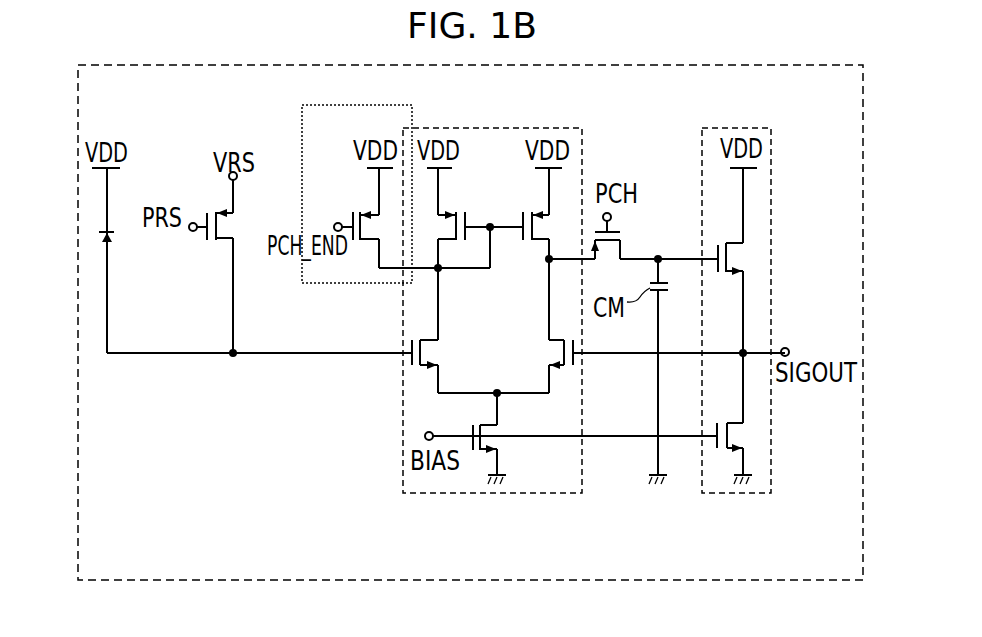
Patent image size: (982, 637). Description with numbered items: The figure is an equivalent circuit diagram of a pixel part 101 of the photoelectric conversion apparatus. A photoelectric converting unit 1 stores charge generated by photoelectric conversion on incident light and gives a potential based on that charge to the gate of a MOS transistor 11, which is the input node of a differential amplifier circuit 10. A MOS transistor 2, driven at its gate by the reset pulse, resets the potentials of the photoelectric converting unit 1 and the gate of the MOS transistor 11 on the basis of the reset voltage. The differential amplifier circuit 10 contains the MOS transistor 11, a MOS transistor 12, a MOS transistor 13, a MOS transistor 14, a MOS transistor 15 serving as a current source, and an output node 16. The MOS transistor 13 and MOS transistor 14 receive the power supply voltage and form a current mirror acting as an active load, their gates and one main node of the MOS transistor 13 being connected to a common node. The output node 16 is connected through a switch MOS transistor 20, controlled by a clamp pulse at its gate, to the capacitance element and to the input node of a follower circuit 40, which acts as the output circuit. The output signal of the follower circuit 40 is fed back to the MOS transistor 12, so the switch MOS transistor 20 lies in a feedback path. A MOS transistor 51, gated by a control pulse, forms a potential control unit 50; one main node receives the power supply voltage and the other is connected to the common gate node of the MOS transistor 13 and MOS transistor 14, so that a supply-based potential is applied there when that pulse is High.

The photoelectric converting unit 1 is at (110, 240).
The MOS transistor 2 is at (232, 227).
The differential amplifier circuit 10 is at (505, 127).
The MOS transistor 11 is at (409, 363).
The MOS transistor 12 is at (550, 350).
The MOS transistor 13 is at (462, 210).
The MOS transistor 14 is at (523, 213).
The MOS transistor for a current source 15 is at (470, 457).
The output node 16 is at (547, 262).
The switch MOS transistor 20 is at (622, 235).
The follower circuit 40 is at (737, 128).
The potential control unit 50 is at (300, 122).
The MOS transistor 51 is at (357, 207).
The pixel part 101 is at (295, 582).